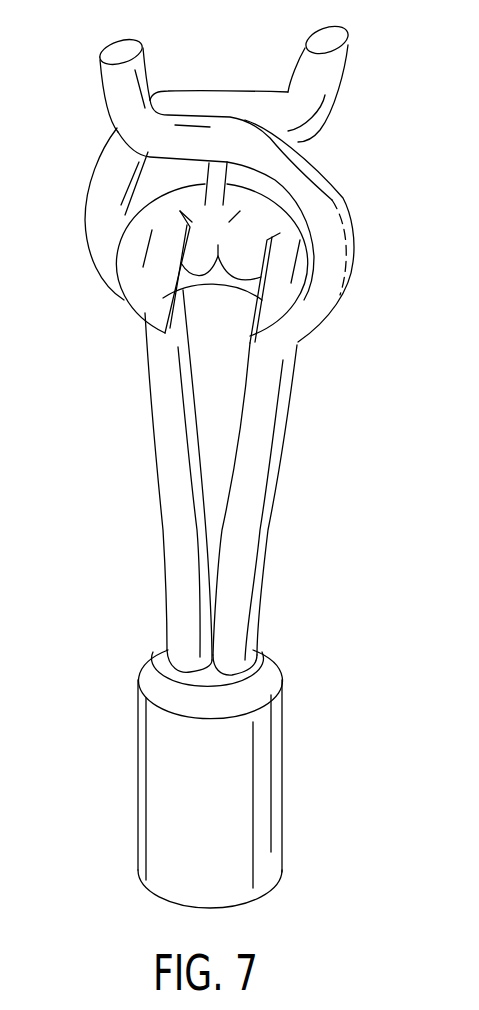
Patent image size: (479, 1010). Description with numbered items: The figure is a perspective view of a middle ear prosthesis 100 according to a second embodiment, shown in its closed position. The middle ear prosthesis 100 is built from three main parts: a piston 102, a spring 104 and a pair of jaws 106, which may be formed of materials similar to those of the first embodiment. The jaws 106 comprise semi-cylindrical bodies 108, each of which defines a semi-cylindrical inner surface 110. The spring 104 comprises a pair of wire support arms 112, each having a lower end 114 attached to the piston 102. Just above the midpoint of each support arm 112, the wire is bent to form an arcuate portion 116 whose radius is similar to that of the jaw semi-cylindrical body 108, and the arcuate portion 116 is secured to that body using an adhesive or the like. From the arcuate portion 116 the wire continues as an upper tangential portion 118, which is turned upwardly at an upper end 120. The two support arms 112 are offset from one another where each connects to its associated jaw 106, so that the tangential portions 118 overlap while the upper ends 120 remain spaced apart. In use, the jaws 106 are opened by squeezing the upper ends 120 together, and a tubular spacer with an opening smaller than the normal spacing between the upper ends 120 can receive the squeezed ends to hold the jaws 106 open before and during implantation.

The middle ear prosthesis 100 is at (72, 500).
The piston 102 is at (162, 775).
The spring 104 is at (163, 558).
The jaws 106 is at (240, 331).
The semi-cylindrical body 108 is at (125, 253).
The semi-cylindrical inner surface 110 is at (221, 247).
The wire support arm 112 is at (157, 460).
The lower end 114 is at (257, 663).
The arcuate portion 116 is at (358, 257).
The upper tangential portion 118 is at (205, 143).
The upper end 120 is at (130, 85).